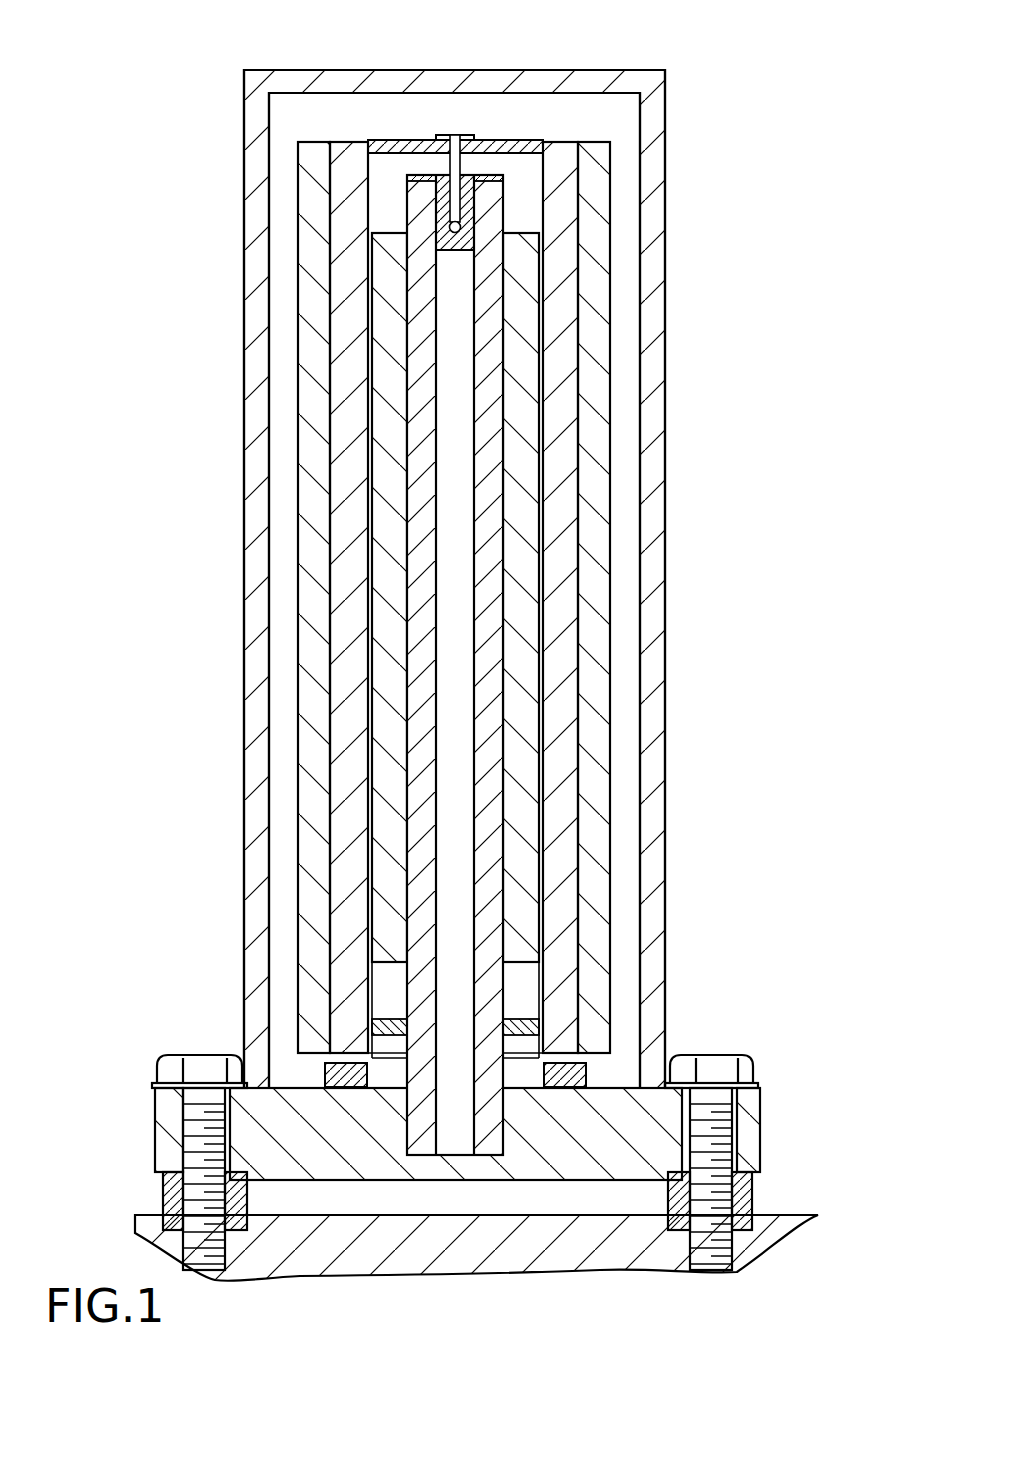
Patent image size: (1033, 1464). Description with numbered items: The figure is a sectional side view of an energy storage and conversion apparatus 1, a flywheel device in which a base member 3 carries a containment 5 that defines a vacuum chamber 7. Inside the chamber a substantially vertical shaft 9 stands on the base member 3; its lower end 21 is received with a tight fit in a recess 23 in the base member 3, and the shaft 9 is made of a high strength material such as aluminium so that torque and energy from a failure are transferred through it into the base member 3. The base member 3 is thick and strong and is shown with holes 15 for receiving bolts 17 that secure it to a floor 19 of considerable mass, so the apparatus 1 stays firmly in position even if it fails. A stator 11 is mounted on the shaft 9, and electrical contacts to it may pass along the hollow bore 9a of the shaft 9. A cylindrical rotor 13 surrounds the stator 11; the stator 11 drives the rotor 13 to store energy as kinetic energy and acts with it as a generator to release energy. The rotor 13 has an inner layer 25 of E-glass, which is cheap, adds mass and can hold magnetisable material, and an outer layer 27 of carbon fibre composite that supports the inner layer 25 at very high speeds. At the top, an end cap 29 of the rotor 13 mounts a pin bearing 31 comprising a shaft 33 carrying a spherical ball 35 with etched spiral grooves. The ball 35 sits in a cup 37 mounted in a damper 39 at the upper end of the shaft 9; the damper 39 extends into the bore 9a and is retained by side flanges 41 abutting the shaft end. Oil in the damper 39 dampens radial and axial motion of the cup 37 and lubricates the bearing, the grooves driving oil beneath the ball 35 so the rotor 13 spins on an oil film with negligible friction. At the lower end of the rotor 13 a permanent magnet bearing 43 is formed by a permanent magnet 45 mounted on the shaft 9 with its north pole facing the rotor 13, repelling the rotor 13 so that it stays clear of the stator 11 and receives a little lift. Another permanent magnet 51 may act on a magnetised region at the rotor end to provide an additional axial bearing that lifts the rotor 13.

The energy storage and conversion apparatus 1 is at (690, 242).
The base member 3 is at (757, 1102).
The containment 5 is at (660, 600).
The vacuum chamber 7 is at (625, 100).
The shaft 9 is at (462, 445).
The hollow bore 9a is at (470, 586).
The stator 11 is at (520, 320).
The cylindrical rotor 13 is at (620, 531).
The holes 15 is at (730, 1145).
The bolts 17 is at (713, 1257).
The floor 19 is at (523, 1245).
The lower end of the shaft 21 is at (423, 1147).
The recess 23 is at (480, 1152).
The inner layer 25 is at (533, 765).
The outer layer 27 is at (603, 845).
The end cap 29 is at (423, 140).
The pin bearing 31 is at (477, 143).
The shaft of the pin bearing 33 is at (461, 197).
The spherical ball 35 is at (450, 227).
The cup 37 is at (437, 236).
The damper 39 is at (446, 252).
The side flanges 41 is at (417, 175).
The permanent magnet bearing 43 is at (530, 1012).
The permanent magnet 45 is at (553, 1027).
The another permanent magnet 51 is at (325, 1070).